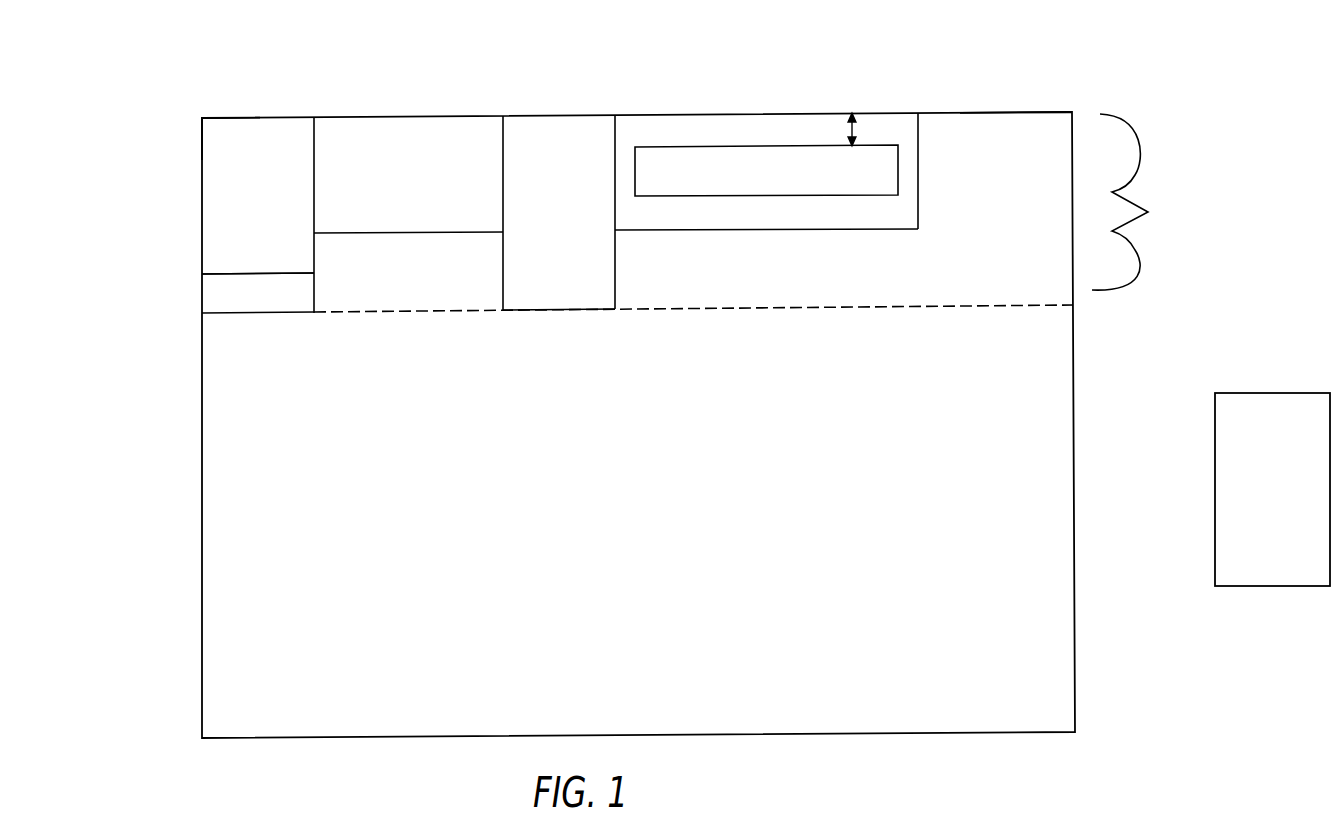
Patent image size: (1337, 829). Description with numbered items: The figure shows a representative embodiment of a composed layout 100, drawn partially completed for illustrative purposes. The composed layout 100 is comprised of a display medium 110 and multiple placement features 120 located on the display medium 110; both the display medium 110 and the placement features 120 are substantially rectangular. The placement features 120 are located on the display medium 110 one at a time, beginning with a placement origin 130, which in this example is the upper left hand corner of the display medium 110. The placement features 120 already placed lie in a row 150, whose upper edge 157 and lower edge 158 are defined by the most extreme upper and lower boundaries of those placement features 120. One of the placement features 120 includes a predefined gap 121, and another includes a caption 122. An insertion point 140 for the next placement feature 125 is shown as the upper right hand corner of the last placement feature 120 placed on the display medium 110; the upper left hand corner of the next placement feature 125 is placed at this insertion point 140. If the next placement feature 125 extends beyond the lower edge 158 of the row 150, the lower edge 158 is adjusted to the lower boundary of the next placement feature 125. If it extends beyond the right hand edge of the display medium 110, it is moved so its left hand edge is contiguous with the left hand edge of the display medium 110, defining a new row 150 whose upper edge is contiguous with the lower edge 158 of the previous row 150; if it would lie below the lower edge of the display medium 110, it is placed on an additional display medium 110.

The composed layout 100 is at (148, 506).
The display medium 110 is at (767, 735).
The placement feature 120 is at (236, 138).
The predefined gap 121 is at (855, 125).
The caption 122 is at (211, 312).
The next placement feature 125 is at (1268, 411).
The placement origin 130 is at (202, 117).
The insertion point 140 is at (918, 112).
The row 150 is at (1161, 202).
The upper edge 157 is at (1020, 110).
The lower edge 158 is at (992, 306).